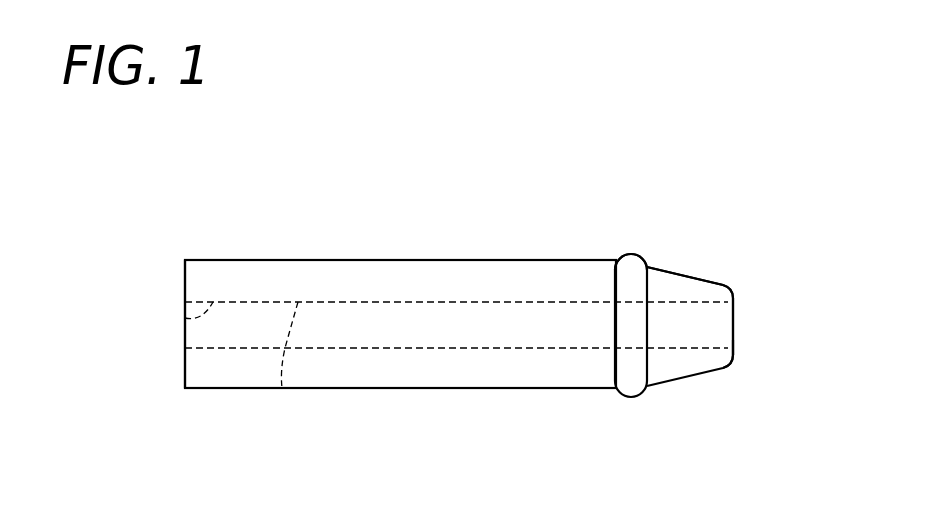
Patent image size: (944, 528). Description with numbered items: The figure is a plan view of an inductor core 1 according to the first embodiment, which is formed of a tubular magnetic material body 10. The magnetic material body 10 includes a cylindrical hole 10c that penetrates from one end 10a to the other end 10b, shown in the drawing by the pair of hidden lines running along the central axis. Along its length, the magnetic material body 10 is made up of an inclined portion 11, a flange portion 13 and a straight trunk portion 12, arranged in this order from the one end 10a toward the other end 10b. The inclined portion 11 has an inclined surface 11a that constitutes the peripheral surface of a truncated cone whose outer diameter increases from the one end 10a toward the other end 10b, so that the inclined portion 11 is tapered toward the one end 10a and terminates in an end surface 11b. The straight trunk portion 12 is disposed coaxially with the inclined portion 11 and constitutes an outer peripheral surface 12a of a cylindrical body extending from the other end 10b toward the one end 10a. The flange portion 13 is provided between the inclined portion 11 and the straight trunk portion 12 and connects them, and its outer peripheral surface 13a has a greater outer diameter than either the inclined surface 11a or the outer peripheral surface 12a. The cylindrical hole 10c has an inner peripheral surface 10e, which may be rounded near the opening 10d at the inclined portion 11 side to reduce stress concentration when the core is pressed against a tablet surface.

The inductor core 1 is at (741, 152).
The magnetic material body 10 is at (312, 268).
The one end 10a is at (733, 318).
The other end 10b is at (185, 322).
The cylindrical hole 10c is at (185, 318).
The opening 10d is at (733, 342).
The inner peripheral surface 10e is at (282, 388).
The inclined portion 11 is at (685, 368).
The inclined surface 11a is at (673, 268).
The end surface 11b is at (733, 297).
The straight trunk portion 12 is at (240, 370).
The outer peripheral surface 12a is at (375, 260).
The flange portion 13 is at (634, 382).
The outer peripheral surface 13a is at (628, 252).